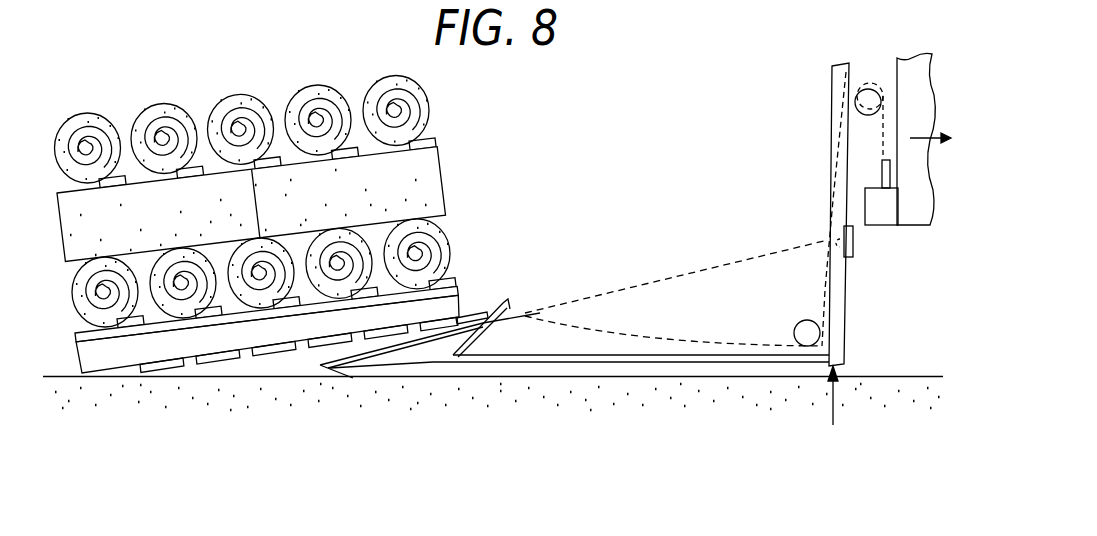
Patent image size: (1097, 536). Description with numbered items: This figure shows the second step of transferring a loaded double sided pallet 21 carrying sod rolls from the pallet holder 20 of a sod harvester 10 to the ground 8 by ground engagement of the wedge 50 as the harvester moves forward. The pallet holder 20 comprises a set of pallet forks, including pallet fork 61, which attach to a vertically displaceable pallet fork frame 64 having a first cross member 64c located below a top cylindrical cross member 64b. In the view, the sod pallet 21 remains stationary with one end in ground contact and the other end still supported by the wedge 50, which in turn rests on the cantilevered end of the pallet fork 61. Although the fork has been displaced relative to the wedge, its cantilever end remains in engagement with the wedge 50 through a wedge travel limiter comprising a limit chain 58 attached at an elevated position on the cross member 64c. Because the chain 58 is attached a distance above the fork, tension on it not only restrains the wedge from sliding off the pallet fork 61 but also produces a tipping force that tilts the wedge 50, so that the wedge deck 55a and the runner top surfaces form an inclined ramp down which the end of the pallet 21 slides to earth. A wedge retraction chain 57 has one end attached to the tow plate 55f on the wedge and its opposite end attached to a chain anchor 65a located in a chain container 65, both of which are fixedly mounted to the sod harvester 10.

The floor surface 8 is at (883, 377).
The sod harvester 10 is at (923, 78).
The pallet holder 20 is at (836, 415).
The double sided pallet 21 is at (130, 348).
The wedge 50 is at (400, 360).
The wedge deck 55a is at (465, 320).
The tow plate 55f is at (493, 320).
The wedge retraction chain 57 is at (647, 337).
The limit chain 58 is at (637, 285).
The pallet fork 61 is at (628, 360).
The vertically displaceable pallet fork frame 64 is at (833, 107).
The top cylindrical cross member 64b is at (866, 89).
The first cross member 64c is at (803, 328).
The chain container 65 is at (878, 218).
The chain anchor 65a is at (882, 169).